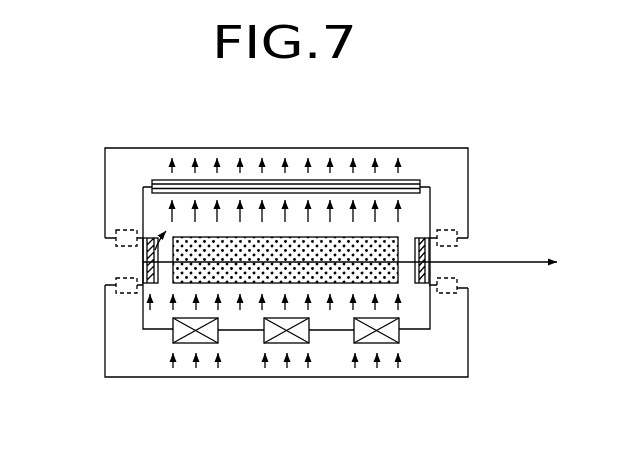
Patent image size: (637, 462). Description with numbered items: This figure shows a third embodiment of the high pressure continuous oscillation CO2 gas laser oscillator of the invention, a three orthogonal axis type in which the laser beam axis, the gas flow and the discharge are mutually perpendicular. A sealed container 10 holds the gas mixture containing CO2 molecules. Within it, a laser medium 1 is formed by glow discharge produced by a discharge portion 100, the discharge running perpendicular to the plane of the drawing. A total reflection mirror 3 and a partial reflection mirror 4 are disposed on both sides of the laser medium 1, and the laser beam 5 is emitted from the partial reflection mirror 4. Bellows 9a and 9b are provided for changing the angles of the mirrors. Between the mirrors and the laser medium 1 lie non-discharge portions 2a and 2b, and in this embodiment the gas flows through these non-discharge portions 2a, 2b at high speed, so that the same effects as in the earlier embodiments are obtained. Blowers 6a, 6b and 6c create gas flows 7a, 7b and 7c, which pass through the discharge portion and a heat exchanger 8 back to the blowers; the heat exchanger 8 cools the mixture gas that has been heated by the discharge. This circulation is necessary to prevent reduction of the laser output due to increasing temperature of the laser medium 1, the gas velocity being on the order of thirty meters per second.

The laser medium 1 is at (380, 248).
The non-discharge portion 2a is at (161, 279).
The non-discharge portion 2b is at (407, 274).
The total reflection mirror 3 is at (143, 262).
The partial reflection mirror 4 is at (429, 267).
The laser beam 5 is at (531, 262).
The blower 6a is at (222, 344).
The blower 6b is at (259, 343).
The blower 6c is at (353, 342).
The gas flow 7a is at (218, 370).
The gas flow 7b is at (308, 370).
The gas flow 7c is at (398, 370).
The heat exchanger 8 is at (412, 180).
The bellows 9a is at (122, 231).
The bellows 9b is at (458, 242).
The container 10 is at (468, 346).
The discharge portion 100 is at (255, 180).